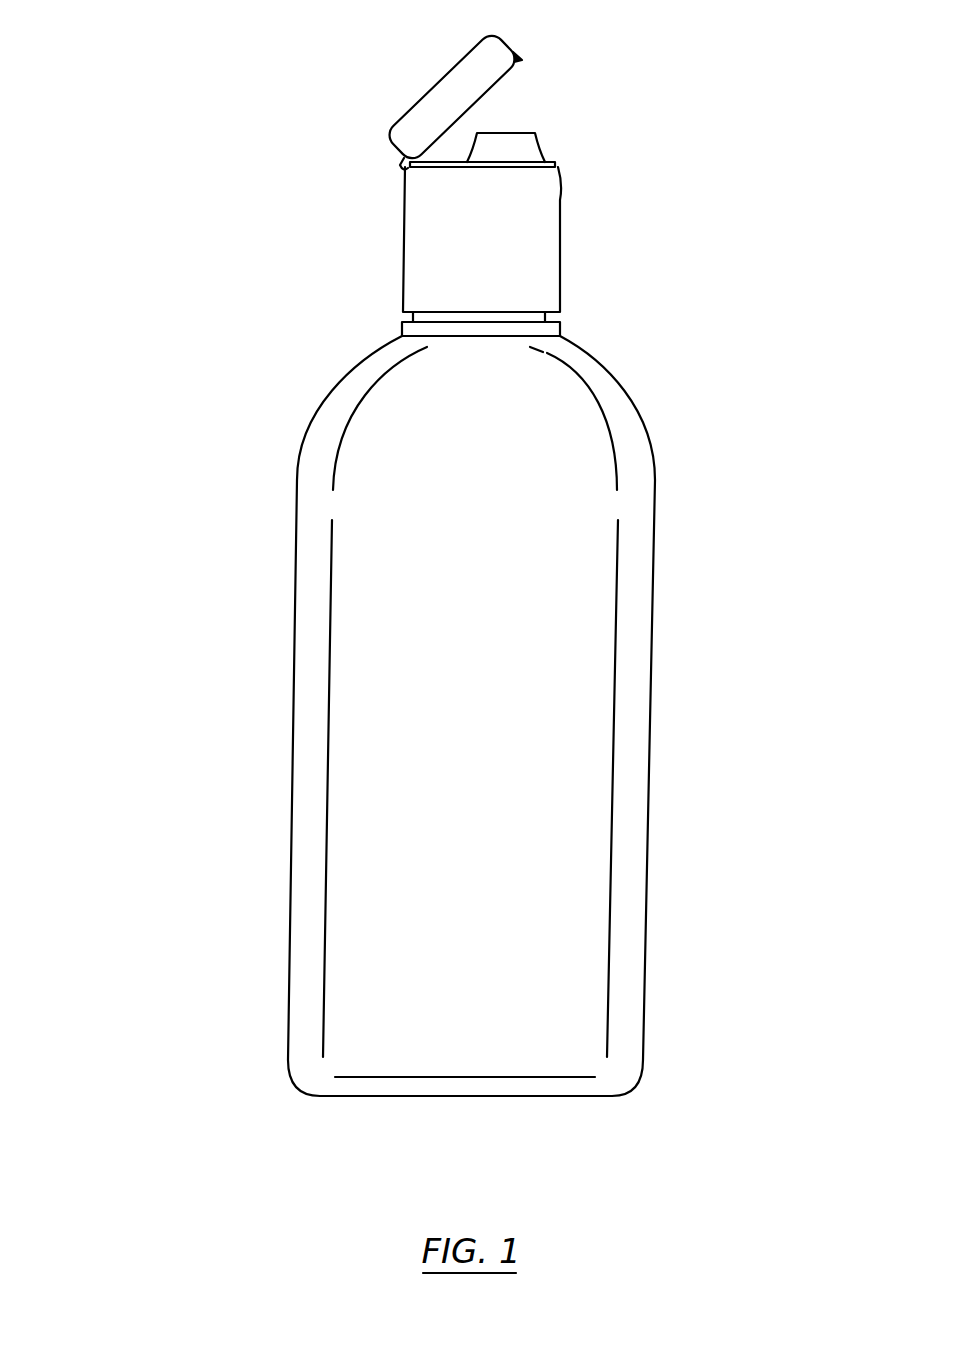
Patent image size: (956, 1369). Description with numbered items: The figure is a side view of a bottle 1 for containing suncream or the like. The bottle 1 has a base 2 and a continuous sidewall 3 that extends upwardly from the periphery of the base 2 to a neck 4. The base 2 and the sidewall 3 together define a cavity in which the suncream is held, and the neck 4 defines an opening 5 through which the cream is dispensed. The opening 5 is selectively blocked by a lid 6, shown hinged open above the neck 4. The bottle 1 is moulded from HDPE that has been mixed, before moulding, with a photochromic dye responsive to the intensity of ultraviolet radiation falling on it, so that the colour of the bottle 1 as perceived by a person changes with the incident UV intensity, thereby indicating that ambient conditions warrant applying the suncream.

The bottle 1 is at (444, 575).
The base 2 is at (357, 1103).
The continuous sidewall 3 is at (587, 685).
The neck 4 is at (573, 323).
The opening 5 is at (507, 125).
The lid 6 is at (425, 73).